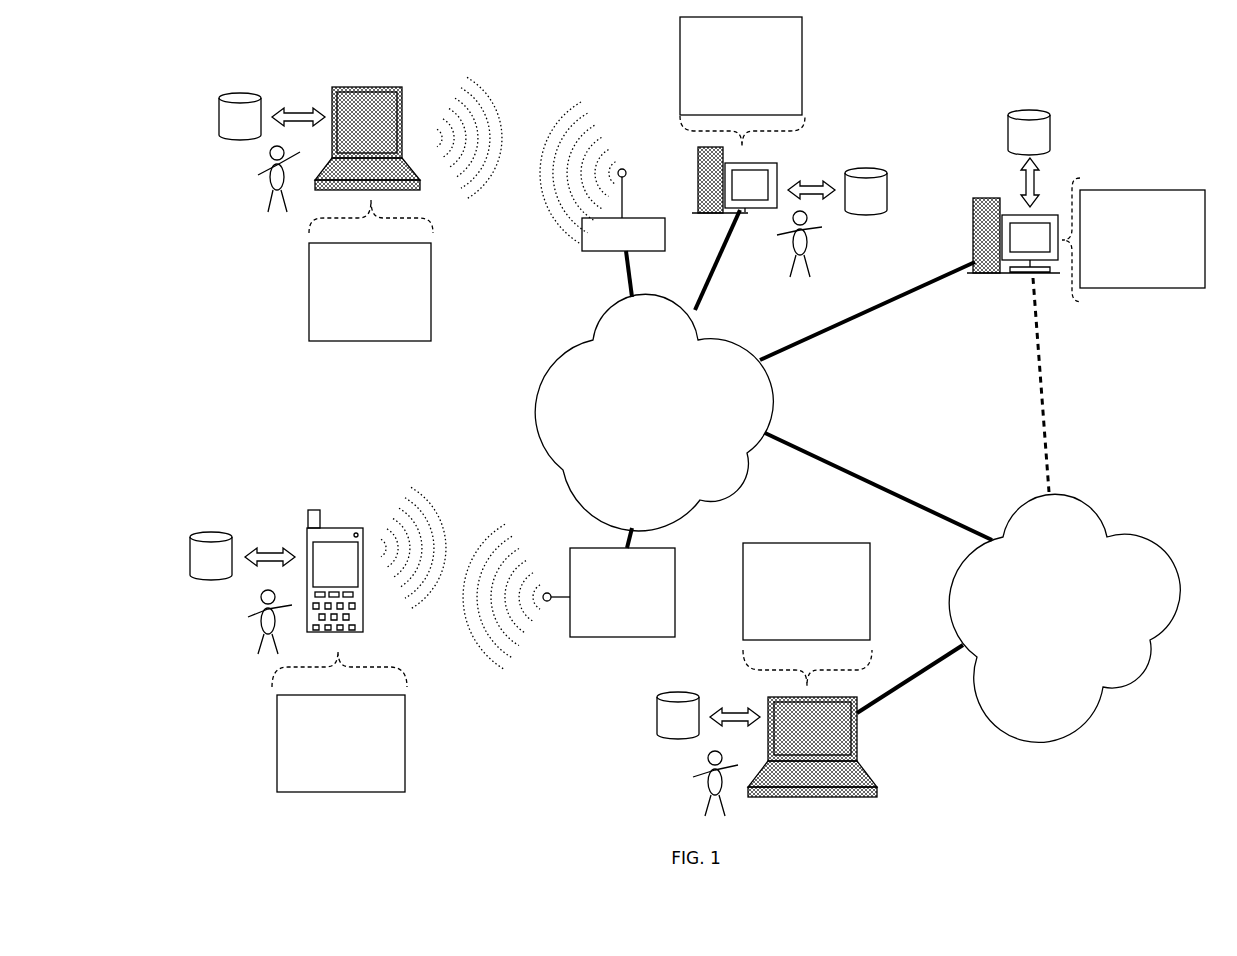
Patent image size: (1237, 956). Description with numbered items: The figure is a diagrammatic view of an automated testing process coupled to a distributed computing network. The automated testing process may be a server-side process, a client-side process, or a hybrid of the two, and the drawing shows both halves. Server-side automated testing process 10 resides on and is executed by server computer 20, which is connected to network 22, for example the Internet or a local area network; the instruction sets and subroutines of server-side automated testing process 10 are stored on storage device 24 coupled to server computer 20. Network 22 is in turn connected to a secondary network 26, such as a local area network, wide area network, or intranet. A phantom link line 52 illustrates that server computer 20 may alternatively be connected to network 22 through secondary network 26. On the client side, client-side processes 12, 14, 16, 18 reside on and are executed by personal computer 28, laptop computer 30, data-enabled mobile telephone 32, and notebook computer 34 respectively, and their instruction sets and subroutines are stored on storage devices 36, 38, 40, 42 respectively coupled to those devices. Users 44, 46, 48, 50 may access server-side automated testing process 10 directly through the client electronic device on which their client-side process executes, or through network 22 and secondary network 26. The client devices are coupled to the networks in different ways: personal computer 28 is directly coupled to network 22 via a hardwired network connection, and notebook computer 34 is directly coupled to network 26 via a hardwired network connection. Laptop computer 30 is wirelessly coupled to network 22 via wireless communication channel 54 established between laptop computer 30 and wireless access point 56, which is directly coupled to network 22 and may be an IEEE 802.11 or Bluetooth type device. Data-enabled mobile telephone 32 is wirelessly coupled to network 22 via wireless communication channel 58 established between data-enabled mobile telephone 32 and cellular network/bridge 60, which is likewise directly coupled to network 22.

The server-side automated testing process 10 is at (1208, 214).
The client-side process 12 is at (803, 97).
The client-side process 14 is at (433, 267).
The client-side process 16 is at (407, 710).
The client-side process 18 is at (871, 612).
The server computer 20 is at (970, 220).
The network 22 is at (654, 412).
The storage device 24 is at (1029, 158).
The network 26 is at (1064, 618).
The personal computer 28 is at (777, 177).
The laptop computer 30 is at (400, 110).
The data-enabled mobile telephone 32 is at (367, 580).
The notebook computer 34 is at (858, 740).
The storage device 36 is at (837, 191).
The storage device 38 is at (272, 116).
The storage device 40 is at (242, 556).
The storage device 42 is at (708, 715).
The user 44 is at (817, 227).
The user 46 is at (247, 168).
The user 48 is at (245, 605).
The user 50 is at (685, 773).
The phantom link line 52 is at (1037, 372).
The wireless communication channel 54 is at (533, 123).
The wireless access point 56 is at (578, 235).
The wireless communication channel 58 is at (468, 547).
The cellular network/bridge 60 is at (677, 562).